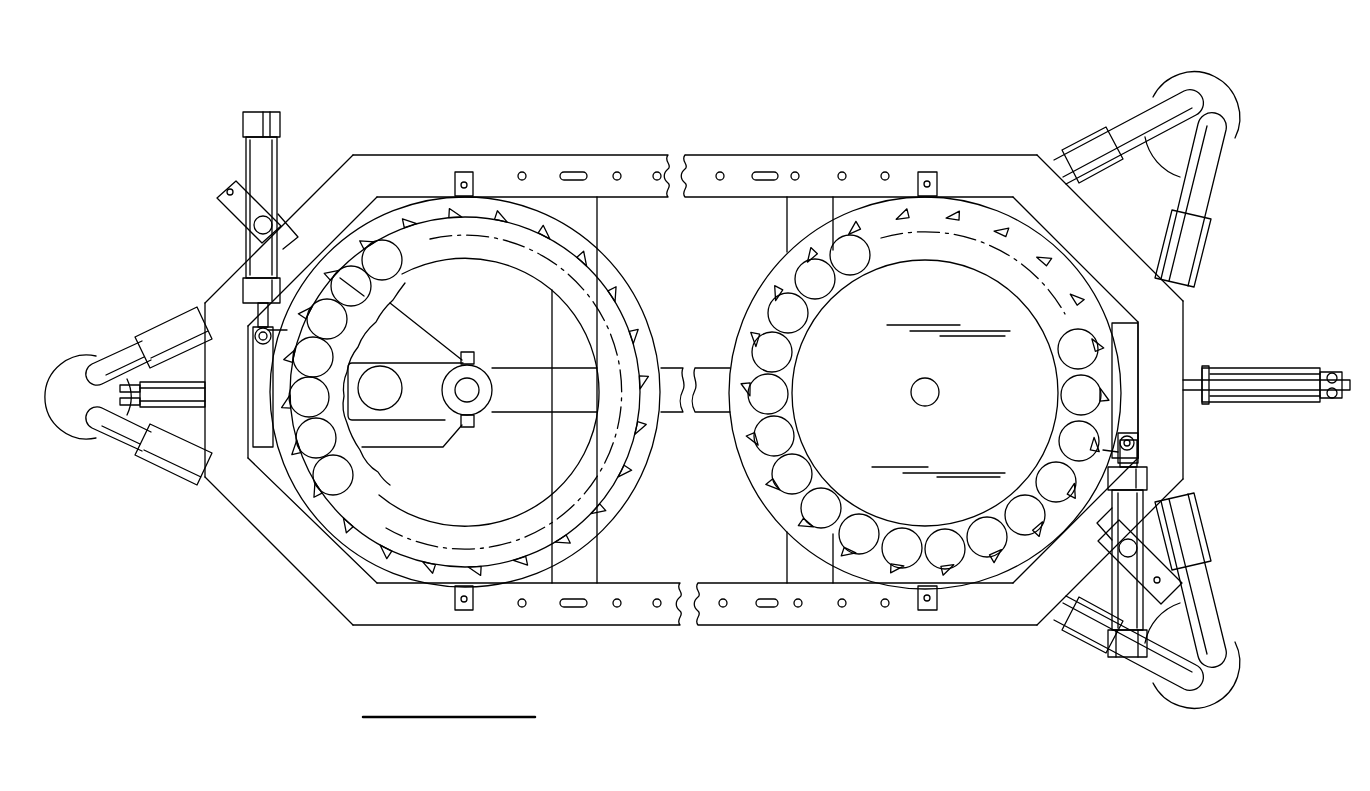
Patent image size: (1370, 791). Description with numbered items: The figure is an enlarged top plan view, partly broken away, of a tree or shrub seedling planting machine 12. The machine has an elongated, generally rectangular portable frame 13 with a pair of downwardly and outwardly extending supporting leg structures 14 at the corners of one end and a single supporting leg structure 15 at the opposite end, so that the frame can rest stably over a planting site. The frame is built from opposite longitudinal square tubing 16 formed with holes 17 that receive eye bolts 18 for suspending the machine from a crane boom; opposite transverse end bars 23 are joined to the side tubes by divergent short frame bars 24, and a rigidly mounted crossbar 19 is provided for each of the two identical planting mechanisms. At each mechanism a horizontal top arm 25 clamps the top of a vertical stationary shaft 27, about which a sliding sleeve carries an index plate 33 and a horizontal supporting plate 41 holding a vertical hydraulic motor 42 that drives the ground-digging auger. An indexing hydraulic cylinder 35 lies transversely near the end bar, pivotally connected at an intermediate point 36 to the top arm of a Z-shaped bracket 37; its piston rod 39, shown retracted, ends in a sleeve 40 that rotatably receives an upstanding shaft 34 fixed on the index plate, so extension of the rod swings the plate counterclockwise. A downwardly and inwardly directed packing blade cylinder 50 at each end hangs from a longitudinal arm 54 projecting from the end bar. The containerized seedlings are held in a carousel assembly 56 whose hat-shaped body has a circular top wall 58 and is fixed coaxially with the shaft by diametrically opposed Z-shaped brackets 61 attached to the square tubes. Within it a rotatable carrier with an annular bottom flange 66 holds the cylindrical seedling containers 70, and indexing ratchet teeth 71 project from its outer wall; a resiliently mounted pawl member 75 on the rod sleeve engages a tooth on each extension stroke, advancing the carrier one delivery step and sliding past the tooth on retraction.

The seedling planting machine 12 is at (1152, 62).
The portable frame 13 is at (1023, 150).
The supporting leg structure 14 is at (1208, 237).
The supporting leg structure 15 is at (158, 325).
The longitudinal square tubing 16 is at (909, 162).
The holes 17 is at (882, 171).
The eye bolts 18 is at (578, 168).
The crossbar 19 is at (597, 216).
The transverse end bar 23 is at (241, 432).
The divergent short frame bar 24 is at (1088, 207).
The top horizontal arm 25 is at (518, 405).
The vertical stationary shaft 27 is at (469, 385).
The index plate 33 is at (433, 337).
The upstanding vertical shaft 34 is at (257, 341).
The indexing hydraulic cylinder 35 is at (272, 174).
The pivotal connection 36 is at (270, 208).
The Z-shaped bracket 37 is at (223, 208).
The piston rod 39 is at (257, 313).
The end sleeve 40 is at (262, 344).
The horizontal supporting plate 41 is at (433, 407).
The hydraulic motor 42 is at (390, 378).
The packing blade cylinder 50 is at (162, 405).
The longitudinal arm 54 is at (177, 395).
The carousel assembly 56 is at (620, 510).
The circular top wall 58 is at (1000, 432).
The Z-shaped bracket 61 is at (455, 183).
The annular bottom flange 66 is at (641, 309).
The seedling containers 70 is at (850, 265).
The indexing ratchet teeth 71 is at (603, 293).
The pawl member 75 is at (304, 336).